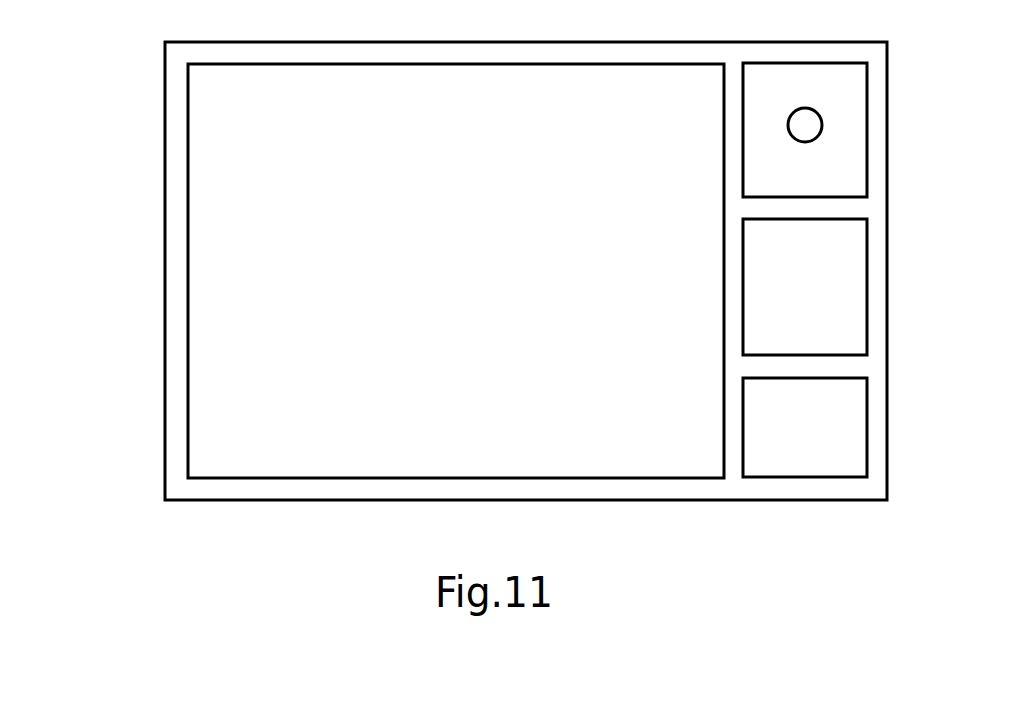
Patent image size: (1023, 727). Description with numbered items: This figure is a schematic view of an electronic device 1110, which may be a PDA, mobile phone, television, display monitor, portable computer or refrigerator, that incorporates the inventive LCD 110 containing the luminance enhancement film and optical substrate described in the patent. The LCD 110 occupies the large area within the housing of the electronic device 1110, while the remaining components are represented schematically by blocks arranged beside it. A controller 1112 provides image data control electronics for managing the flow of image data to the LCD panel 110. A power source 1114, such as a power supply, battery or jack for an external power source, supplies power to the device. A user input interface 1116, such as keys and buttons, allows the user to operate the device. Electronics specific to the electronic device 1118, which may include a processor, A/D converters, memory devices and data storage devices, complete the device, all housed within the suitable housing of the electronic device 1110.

The LCD 110 is at (662, 458).
The electronic device 1110 is at (867, 48).
The controller 1112 is at (847, 317).
The power source 1114 is at (805, 125).
The user input interface 1116 is at (847, 450).
The electronics specific to the electronic device 1118 is at (855, 173).